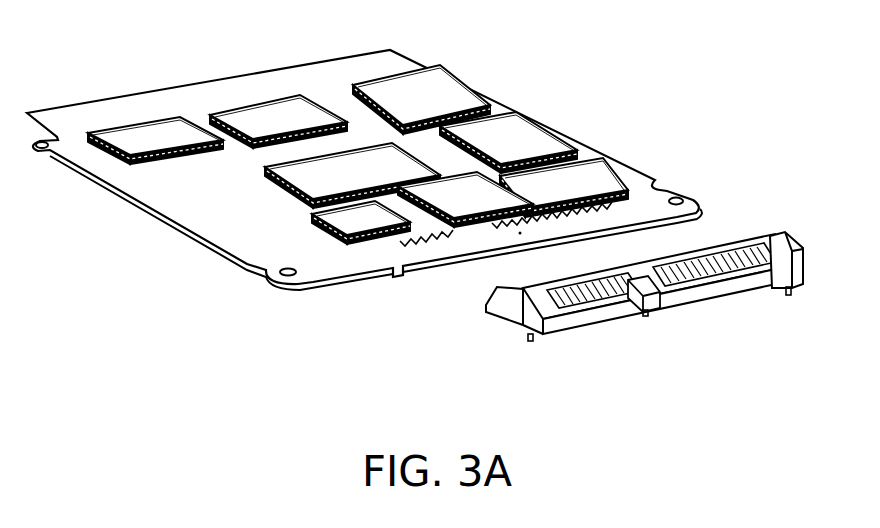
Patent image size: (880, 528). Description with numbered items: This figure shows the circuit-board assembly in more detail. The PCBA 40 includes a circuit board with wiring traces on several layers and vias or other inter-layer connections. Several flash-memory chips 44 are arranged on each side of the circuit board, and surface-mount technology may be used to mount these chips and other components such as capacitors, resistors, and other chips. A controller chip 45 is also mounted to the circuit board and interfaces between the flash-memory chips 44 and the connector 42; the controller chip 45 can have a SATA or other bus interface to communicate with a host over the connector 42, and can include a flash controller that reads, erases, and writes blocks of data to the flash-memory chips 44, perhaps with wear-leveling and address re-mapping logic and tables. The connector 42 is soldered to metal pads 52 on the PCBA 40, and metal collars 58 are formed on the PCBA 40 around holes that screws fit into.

The PCBA 40 is at (235, 217).
The connector 42 is at (688, 288).
The flash-memory chips 44 is at (434, 104).
The controller chip 45 is at (284, 127).
The metal pads 52 is at (433, 248).
The metal collars 58 is at (50, 148).